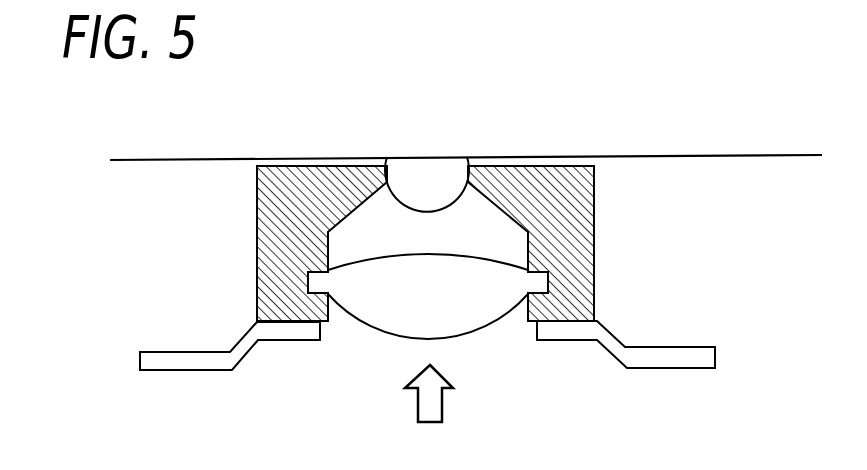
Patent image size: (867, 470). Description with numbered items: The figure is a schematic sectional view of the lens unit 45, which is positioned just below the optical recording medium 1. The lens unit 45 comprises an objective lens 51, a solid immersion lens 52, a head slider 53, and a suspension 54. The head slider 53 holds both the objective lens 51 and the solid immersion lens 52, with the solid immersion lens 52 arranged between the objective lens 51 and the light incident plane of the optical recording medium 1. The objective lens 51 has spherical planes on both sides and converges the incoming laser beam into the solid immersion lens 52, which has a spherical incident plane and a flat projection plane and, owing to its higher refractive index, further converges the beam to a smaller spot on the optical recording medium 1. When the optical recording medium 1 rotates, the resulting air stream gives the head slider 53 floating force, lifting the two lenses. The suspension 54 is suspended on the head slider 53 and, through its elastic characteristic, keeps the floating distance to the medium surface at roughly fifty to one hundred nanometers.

The optical recording medium 1 is at (584, 133).
The lens unit 45 is at (391, 250).
The objective lens 51 is at (483, 333).
The solid immersion lens 52 is at (428, 170).
The head slider 53 is at (596, 216).
The suspension 54 is at (180, 355).